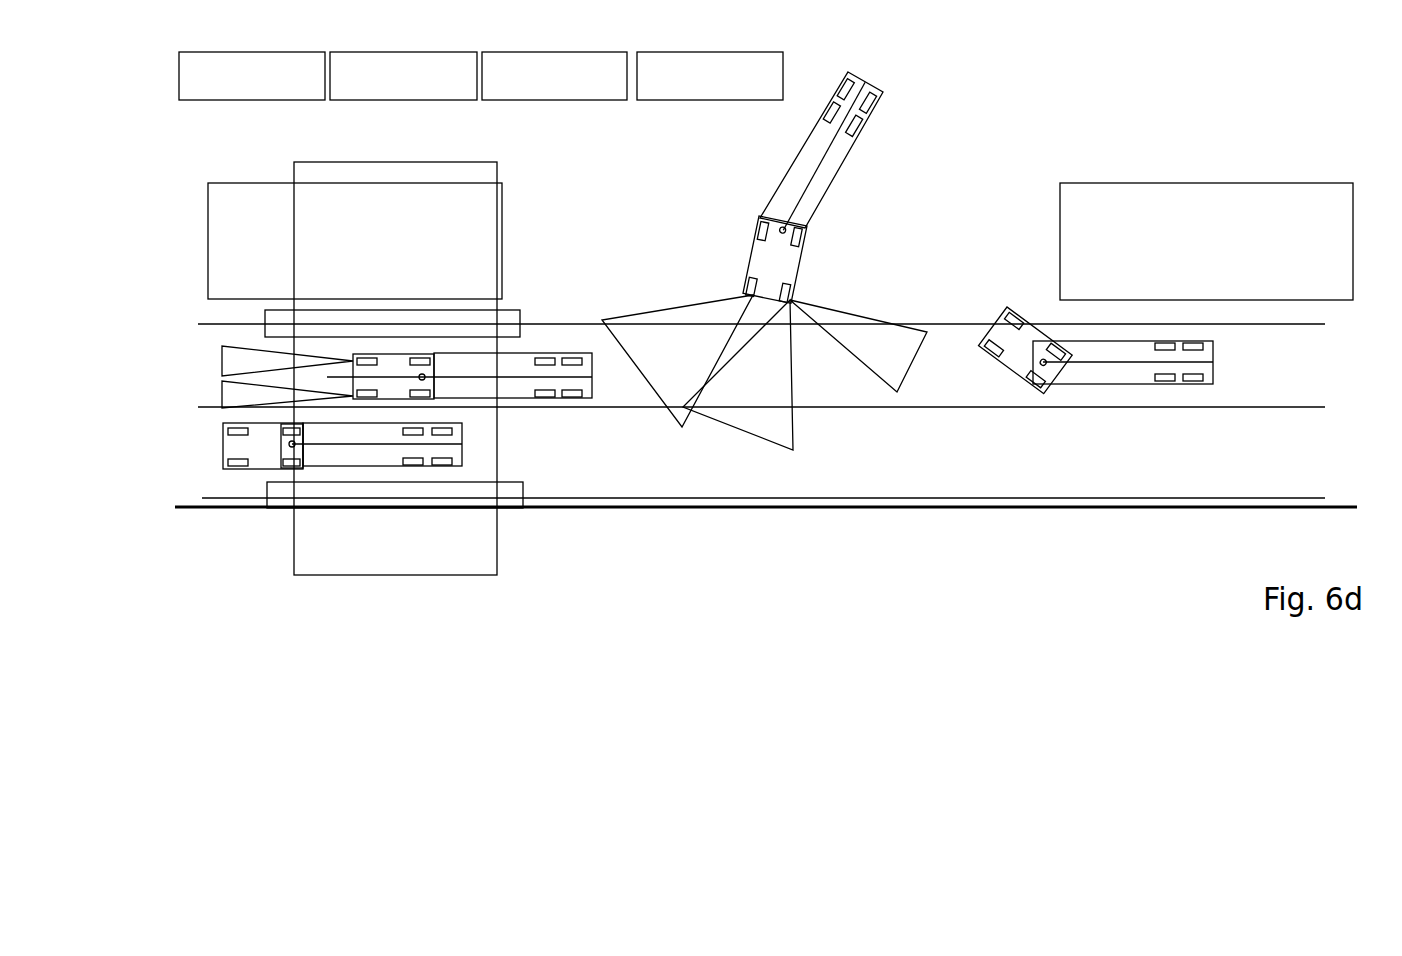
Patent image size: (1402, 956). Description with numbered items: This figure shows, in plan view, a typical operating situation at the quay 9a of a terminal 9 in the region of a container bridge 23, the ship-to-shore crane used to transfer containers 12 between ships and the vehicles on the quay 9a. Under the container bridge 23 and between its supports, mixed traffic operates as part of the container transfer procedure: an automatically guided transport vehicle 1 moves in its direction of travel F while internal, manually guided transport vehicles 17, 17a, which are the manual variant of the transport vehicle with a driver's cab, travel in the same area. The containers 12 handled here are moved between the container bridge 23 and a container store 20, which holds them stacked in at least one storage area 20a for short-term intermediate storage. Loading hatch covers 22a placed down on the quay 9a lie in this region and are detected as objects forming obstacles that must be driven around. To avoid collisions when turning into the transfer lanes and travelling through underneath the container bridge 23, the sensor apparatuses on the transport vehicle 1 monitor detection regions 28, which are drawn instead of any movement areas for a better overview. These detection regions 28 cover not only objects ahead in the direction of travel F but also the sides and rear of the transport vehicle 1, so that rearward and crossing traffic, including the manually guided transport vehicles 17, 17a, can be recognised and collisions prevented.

The automatically guided transport vehicle 1 is at (820, 178).
The terminal 9 is at (1067, 121).
The quay 9a is at (1227, 500).
The container 12 is at (481, 107).
The container store 20 is at (481, 107).
The storage area 20a is at (577, 87).
The trailer 17 is at (801, 388).
The internal, manually guided transport vehicle 17a is at (1207, 357).
The loading hatch cover 22a is at (242, 230).
The container bridge 23 is at (465, 243).
The detection region 28 is at (235, 397).
The direction of travel F is at (212, 378).